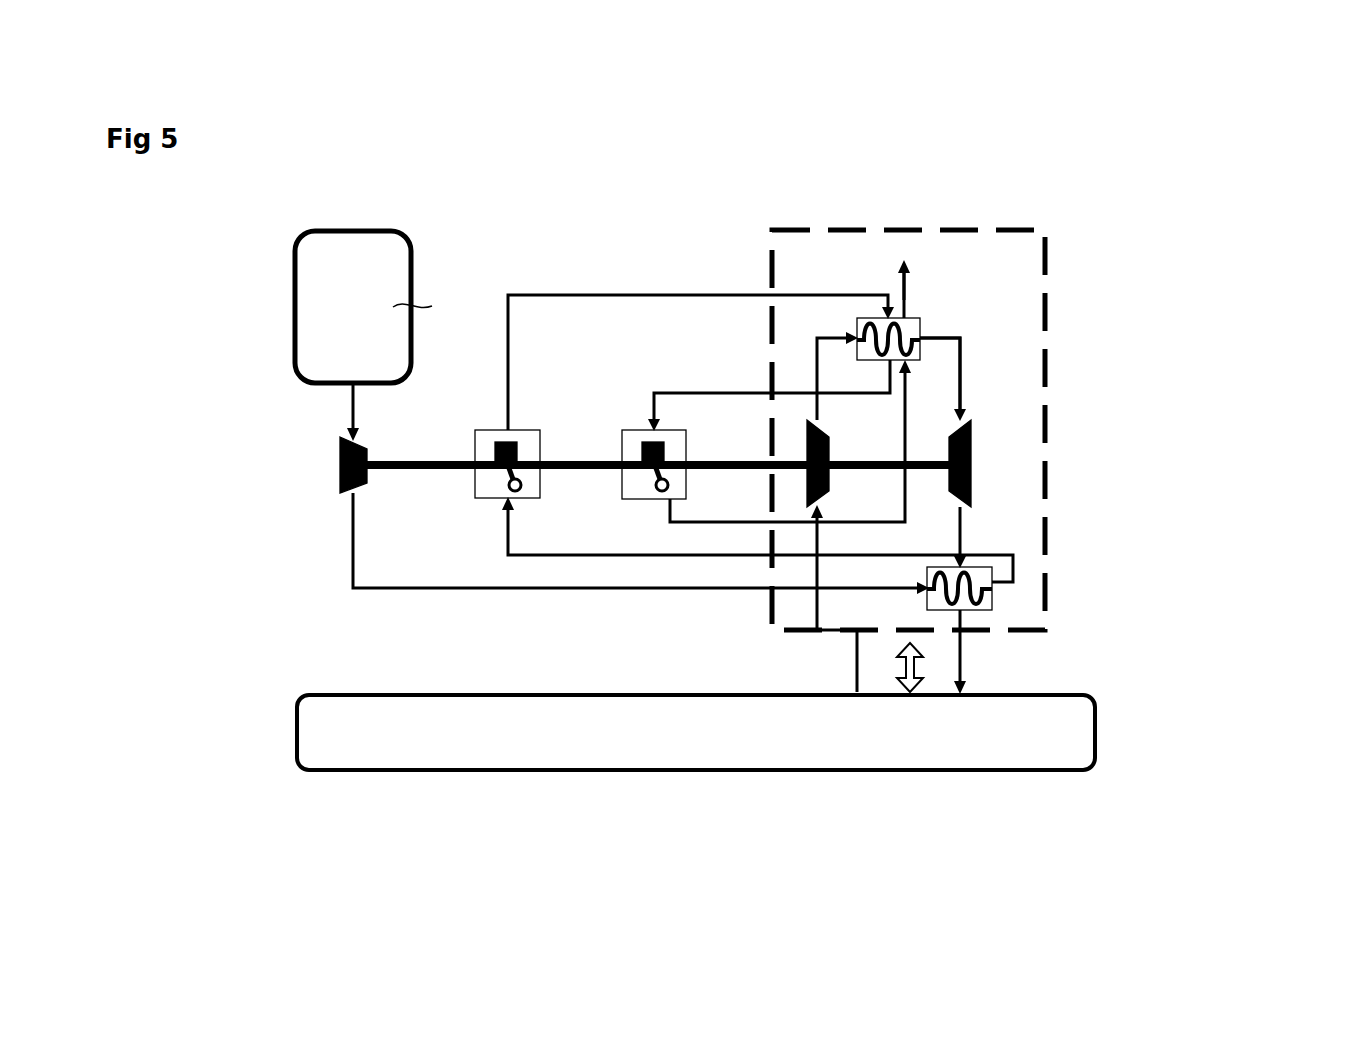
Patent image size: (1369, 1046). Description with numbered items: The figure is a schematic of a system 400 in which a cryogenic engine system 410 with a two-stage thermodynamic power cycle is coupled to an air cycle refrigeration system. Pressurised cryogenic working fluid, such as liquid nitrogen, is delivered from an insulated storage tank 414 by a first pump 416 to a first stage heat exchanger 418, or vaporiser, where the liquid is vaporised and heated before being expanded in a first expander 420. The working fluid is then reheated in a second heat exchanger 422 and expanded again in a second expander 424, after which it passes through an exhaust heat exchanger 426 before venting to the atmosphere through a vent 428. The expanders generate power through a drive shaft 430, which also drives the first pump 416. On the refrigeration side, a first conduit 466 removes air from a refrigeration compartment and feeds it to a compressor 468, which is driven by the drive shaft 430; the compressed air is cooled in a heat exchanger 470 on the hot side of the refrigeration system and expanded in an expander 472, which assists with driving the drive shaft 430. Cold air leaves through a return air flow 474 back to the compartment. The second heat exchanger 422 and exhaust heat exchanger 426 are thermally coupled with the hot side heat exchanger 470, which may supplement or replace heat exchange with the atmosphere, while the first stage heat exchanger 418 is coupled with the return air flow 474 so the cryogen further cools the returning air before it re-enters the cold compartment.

The system 400 is at (376, 645).
The cryogenic engine system 410 is at (262, 641).
The insulated storage tank 414 is at (402, 244).
The first pump 416 is at (340, 467).
The first stage heat exchanger 418 is at (1000, 582).
The first expander 420 is at (492, 434).
The second heat exchanger 422 is at (1100, 304).
The second expander 424 is at (634, 436).
The exhaust heat exchanger 426 is at (1100, 304).
The vent 428 is at (908, 275).
The drive shaft 430 is at (928, 425).
The first conduit 466 is at (857, 667).
The compressor 468 is at (810, 420).
The heat exchanger 470 is at (922, 327).
The expander 472 is at (975, 446).
The return air flow 474 is at (965, 657).